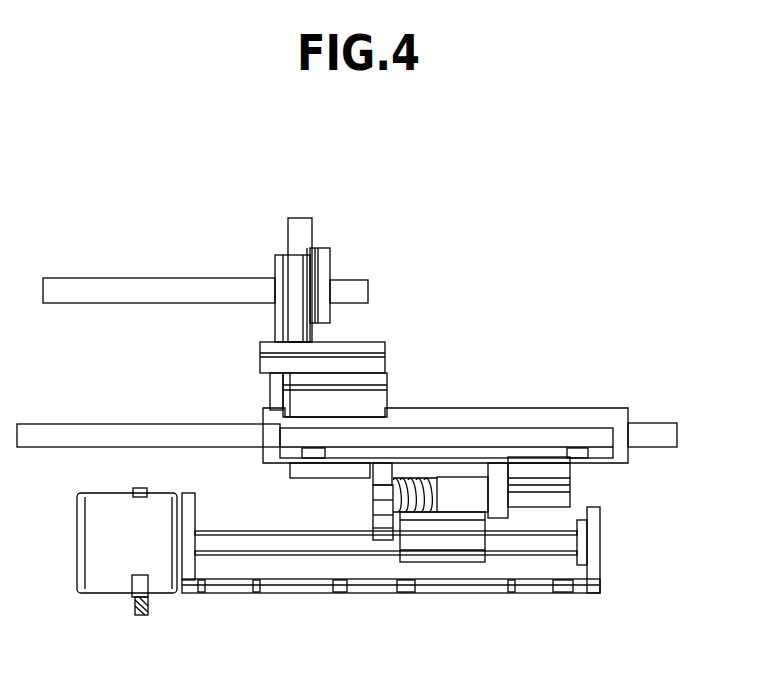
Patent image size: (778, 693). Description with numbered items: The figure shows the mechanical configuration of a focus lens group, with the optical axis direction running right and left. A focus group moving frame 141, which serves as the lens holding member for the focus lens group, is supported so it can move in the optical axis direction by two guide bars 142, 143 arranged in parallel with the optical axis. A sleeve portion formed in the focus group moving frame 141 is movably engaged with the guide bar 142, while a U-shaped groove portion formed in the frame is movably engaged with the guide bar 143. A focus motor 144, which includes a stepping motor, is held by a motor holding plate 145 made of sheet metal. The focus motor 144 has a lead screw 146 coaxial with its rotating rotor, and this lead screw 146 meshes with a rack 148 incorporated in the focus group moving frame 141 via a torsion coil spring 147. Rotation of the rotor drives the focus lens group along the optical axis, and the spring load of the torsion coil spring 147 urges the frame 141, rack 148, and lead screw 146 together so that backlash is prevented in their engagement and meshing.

The focus group moving frame 141 is at (297, 218).
The guide bar 142 is at (348, 280).
The guide bar 143 is at (657, 423).
The focus motor 144 is at (166, 593).
The motor holding plate 145 is at (365, 593).
The lead screw 146 is at (282, 553).
The torsion coil spring 147 is at (437, 513).
The rack 148 is at (427, 563).